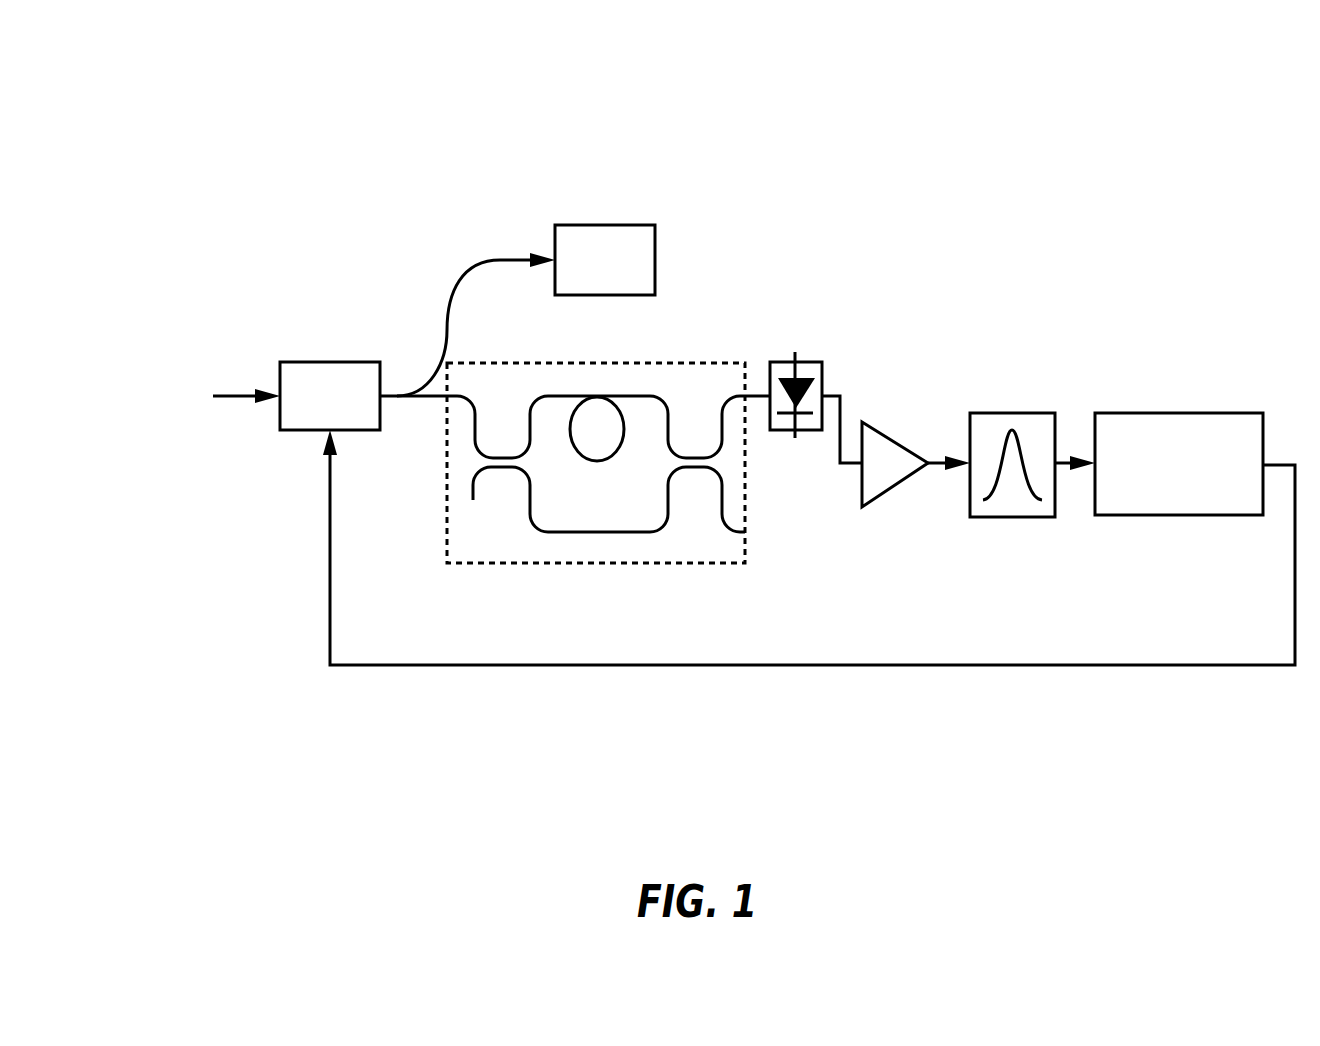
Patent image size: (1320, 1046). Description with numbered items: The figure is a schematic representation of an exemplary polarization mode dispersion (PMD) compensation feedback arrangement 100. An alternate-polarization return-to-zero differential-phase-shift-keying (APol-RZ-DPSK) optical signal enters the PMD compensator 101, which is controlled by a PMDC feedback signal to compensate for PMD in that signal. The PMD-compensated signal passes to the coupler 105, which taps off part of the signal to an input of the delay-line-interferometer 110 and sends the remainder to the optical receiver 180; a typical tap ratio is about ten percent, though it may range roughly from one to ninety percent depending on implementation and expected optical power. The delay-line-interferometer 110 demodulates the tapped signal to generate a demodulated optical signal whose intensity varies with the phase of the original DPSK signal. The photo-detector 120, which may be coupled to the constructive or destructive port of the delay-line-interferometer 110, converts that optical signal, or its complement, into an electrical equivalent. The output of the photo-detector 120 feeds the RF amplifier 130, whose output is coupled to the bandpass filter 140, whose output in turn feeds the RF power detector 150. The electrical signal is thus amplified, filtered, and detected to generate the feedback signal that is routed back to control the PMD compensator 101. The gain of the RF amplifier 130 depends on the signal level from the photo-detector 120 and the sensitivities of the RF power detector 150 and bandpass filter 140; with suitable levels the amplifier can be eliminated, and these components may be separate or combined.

The PMD compensation feedback arrangement 100 is at (722, 116).
The PMD compensator 101 is at (332, 361).
The coupler 105 is at (408, 405).
The delay-line-interferometer 110 is at (680, 362).
The photo-detector 120 is at (811, 361).
The RF amplifier 130 is at (905, 443).
The bandpass filter 140 is at (1012, 413).
The RF power detector 150 is at (1177, 413).
The optical receiver 180 is at (612, 225).